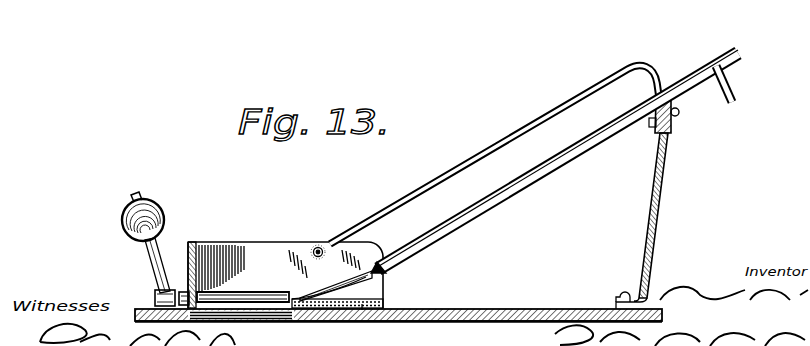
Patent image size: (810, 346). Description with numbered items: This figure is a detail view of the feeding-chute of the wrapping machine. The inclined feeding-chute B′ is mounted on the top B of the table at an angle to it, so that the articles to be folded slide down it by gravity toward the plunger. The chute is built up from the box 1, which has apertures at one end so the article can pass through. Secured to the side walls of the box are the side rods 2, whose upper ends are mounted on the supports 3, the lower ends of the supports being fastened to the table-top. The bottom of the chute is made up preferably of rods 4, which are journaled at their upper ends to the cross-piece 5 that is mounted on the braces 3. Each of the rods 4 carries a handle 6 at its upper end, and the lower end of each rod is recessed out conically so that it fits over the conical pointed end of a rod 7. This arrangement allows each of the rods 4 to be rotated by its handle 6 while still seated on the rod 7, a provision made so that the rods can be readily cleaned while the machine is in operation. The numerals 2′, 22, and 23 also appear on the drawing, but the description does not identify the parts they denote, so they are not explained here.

The box 1 is at (297, 240).
The side rods 2 is at (153, 297).
The clamping block 2′ is at (275, 265).
The screw stem 22 is at (153, 265).
The ball handle 23 is at (157, 207).
The supports 3 is at (660, 193).
The rods 4 is at (539, 199).
The cross-piece 5 is at (679, 127).
The handle 6 is at (736, 84).
The rod 7 is at (350, 287).
The top of the table B is at (537, 310).
The inclined feeding-chute B′ is at (386, 291).